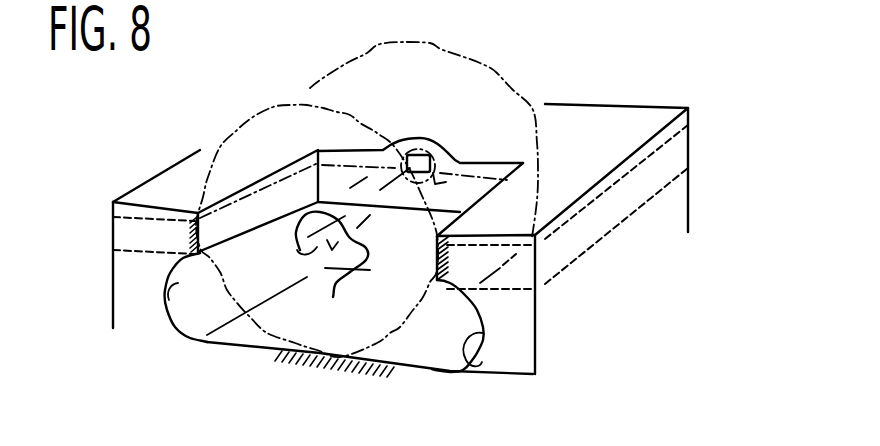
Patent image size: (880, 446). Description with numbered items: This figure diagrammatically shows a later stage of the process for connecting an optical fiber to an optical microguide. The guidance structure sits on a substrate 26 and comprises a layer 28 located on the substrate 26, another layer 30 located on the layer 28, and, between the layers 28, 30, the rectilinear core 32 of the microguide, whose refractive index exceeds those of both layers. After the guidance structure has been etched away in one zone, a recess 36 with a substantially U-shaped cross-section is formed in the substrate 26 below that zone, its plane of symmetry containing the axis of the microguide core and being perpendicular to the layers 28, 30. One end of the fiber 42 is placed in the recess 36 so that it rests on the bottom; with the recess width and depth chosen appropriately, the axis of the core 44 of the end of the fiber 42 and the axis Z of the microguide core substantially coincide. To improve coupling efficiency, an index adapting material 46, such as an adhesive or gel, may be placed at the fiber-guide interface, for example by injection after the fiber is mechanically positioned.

The substrate 26 is at (547, 289).
The layer 28 is at (680, 147).
The layer 30 is at (113, 202).
The rectilinear core 32 is at (415, 155).
The recess 36 is at (165, 306).
The fiber 42 is at (313, 87).
The core 44 is at (300, 250).
The index adapting material 46 is at (390, 148).